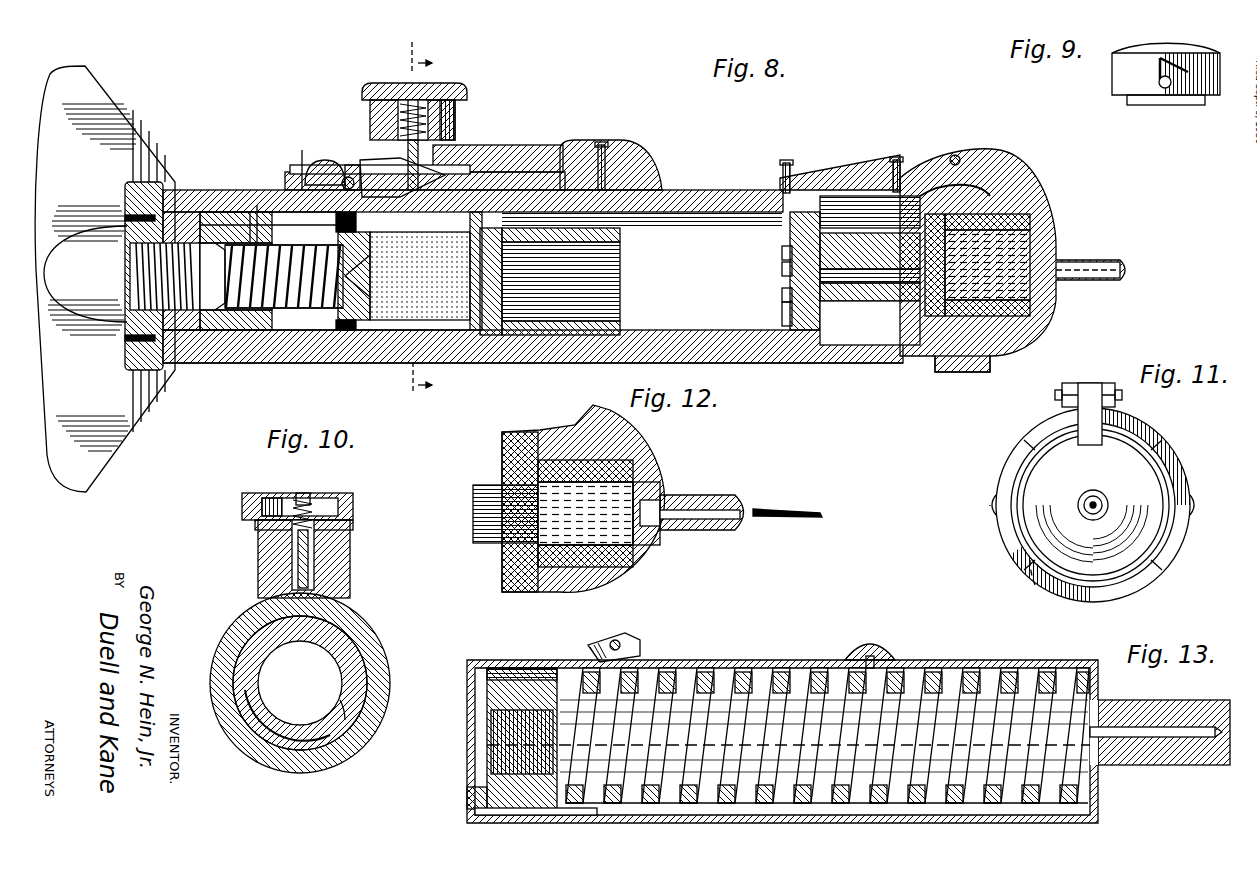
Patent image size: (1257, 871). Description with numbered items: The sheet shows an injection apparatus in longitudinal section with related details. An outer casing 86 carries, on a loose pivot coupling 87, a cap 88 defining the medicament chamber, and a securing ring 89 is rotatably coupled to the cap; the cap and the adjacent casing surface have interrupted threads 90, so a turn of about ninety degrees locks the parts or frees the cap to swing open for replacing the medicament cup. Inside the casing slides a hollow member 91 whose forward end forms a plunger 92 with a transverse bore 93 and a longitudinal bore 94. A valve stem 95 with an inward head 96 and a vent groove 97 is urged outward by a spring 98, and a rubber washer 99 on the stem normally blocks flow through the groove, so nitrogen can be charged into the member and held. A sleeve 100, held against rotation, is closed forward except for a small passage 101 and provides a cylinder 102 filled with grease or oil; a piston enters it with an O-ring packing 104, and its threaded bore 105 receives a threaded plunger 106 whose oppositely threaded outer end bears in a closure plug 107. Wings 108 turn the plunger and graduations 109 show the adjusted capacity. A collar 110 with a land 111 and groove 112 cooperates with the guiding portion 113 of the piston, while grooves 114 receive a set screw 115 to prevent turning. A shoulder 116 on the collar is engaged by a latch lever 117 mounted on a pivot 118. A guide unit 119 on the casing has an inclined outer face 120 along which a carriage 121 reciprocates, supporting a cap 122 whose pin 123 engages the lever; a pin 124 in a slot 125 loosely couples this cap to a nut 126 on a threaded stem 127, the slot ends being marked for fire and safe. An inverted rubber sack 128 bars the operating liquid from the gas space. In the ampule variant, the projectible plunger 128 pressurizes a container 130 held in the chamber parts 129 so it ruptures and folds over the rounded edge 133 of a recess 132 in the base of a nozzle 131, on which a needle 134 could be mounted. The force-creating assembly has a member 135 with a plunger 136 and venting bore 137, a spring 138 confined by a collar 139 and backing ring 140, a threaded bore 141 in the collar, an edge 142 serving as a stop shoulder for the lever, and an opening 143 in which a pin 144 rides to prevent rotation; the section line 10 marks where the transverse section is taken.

In FIG. 8, the section line 10— 10 is at (446, 218).
In FIG. 8, the outer casing 86 is at (718, 188).
In FIG. 10, the outer casing 86 is at (391, 662).
In FIG. 8, the loose pivot coupling 87 is at (958, 155).
In FIG. 11, the loose pivot coupling 87 is at (1062, 392).
In FIG. 8, the cap 88 is at (1023, 180).
In FIG. 11, the cap 88 is at (1170, 462).
In FIG. 8, the securing ring 89 is at (958, 358).
In FIG. 11, the securing ring 89 is at (1177, 545).
In FIG. 8, the interrupted threads 90 is at (975, 210).
In FIG. 11, the interrupted threads 90 is at (1037, 585).
In FIG. 8, the hollow member 91 is at (593, 340).
In FIG. 10, the hollow member 91 is at (362, 646).
In FIG. 8, the plunger 92 is at (902, 225).
In FIG. 8, the transverse bore 93 is at (827, 282).
In FIG. 8, the longitudinal bore 94 is at (890, 278).
In FIG. 8, the stem 95 is at (782, 294).
In FIG. 8, the inward head 96 is at (782, 270).
In FIG. 8, the vent groove 97 is at (868, 221).
In FIG. 8, the spring 98 is at (782, 318).
In FIG. 8, the washer of rubber 99 is at (782, 254).
In FIG. 8, the sleeve 100 is at (404, 365).
In FIG. 10, the sleeve 100 is at (335, 720).
In FIG. 8, the passage 101 is at (472, 335).
In FIG. 8, the cylinder 102 is at (502, 283).
In FIG. 8, the O-ring packing 104 is at (353, 333).
In FIG. 8, the threaded bore 105 is at (375, 305).
In FIG. 8, the threaded plunger 106 is at (253, 314).
In FIG. 8, the closure plug 107 is at (198, 372).
In FIG. 8, the wings 108 is at (108, 60).
In FIG. 8, the graduations 109 is at (150, 160).
In FIG. 8, the collar 110 is at (302, 310).
In FIG. 8, the land 111 is at (232, 318).
In FIG. 8, the groove 112 is at (240, 228).
In FIG. 8, the guiding portion 113 is at (232, 280).
In FIG. 8, the longitudinally extending grooves 114 is at (247, 215).
In FIG. 8, the set screw 115 is at (283, 172).
In FIG. 8, the shoulder 116 is at (312, 184).
In FIG. 8, the lever 117 is at (360, 180).
In FIG. 10, the lever 117 is at (310, 582).
In FIG. 13, the lever 117 is at (640, 638).
In FIG. 8, the pivot 118 is at (343, 177).
In FIG. 8, the guide unit 119 is at (633, 153).
In FIG. 8, the outer face 120 is at (490, 165).
In FIG. 8, the carriage 121 is at (460, 187).
In FIG. 10, the carriage 121 is at (335, 590).
In FIG. 8, the cap 122 is at (377, 88).
In FIG. 9, the cap 122 is at (1182, 53).
In FIG. 10, the cap 122 is at (353, 502).
In FIG. 8, the pin 123 is at (404, 85).
In FIG. 10, the pin 123 is at (303, 510).
In FIG. 9, the pin 124 is at (1165, 90).
In FIG. 9, the slot 125 is at (1160, 70).
In FIG. 8, the nut 126 is at (460, 118).
In FIG. 8, the threaded stem 127 is at (458, 134).
In FIG. 10, the threaded stem 127 is at (340, 545).
In FIG. 8, the inverted sack 128 is at (505, 268).
In FIG. 12, the inverted sack 128 is at (475, 525).
In FIG. 12, the medicament chamber parts 129 is at (610, 450).
In FIG. 12, the container 130 is at (642, 563).
In FIG. 12, the nozzle 131 is at (710, 495).
In FIG. 12, the recess 132 is at (640, 533).
In FIG. 12, the rounded edge 133 is at (660, 497).
In FIG. 12, the needle 134 is at (772, 507).
In FIG. 13, the member 135 is at (937, 818).
In FIG. 13, the plunger 136 is at (1200, 690).
In FIG. 13, the venting bore 137 is at (1170, 740).
In FIG. 13, the spring 138 is at (860, 805).
In FIG. 13, the collar 139 is at (493, 802).
In FIG. 13, the backing ring 140 is at (488, 797).
In FIG. 13, the threaded bore 141 is at (488, 755).
In FIG. 13, the edge 142 is at (585, 662).
In FIG. 13, the opening 143 is at (790, 642).
In FIG. 13, the pin 144 is at (892, 632).